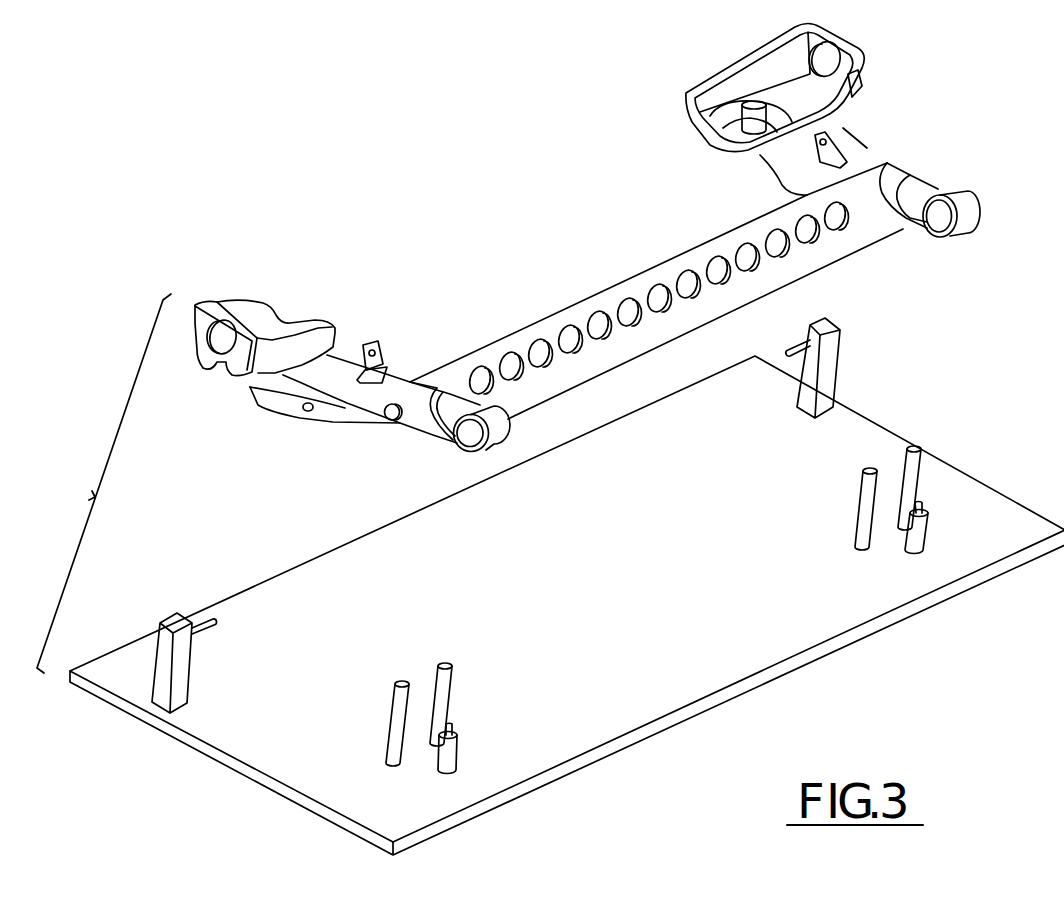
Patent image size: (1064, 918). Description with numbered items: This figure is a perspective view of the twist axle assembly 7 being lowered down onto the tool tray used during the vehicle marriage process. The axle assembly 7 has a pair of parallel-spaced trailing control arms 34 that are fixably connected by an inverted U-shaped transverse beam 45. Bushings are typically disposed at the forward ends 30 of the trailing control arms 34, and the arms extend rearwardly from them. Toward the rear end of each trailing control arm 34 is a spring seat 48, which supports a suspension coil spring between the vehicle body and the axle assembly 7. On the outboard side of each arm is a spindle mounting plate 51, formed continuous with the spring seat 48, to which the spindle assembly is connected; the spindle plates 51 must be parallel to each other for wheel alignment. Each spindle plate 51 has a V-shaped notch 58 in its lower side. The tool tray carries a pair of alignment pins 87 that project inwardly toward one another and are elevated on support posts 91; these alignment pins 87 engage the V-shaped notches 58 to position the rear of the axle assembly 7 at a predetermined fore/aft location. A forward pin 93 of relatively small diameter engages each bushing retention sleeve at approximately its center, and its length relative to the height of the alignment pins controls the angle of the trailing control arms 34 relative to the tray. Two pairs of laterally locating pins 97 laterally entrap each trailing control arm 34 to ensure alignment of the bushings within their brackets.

The twist axle assembly 7 is at (570, 190).
The forward ends 30 is at (932, 188).
The trailing control arms 34 is at (863, 157).
The transverse beam 45 is at (637, 340).
The spring seat 48 is at (722, 118).
The spindle mounting plate 51 is at (199, 304).
The V-shaped notch 58 is at (224, 378).
The alignment pins 87 is at (803, 340).
The support posts 91 is at (838, 365).
The forward pin 93 is at (921, 510).
The laterally locating pins 97 is at (915, 465).